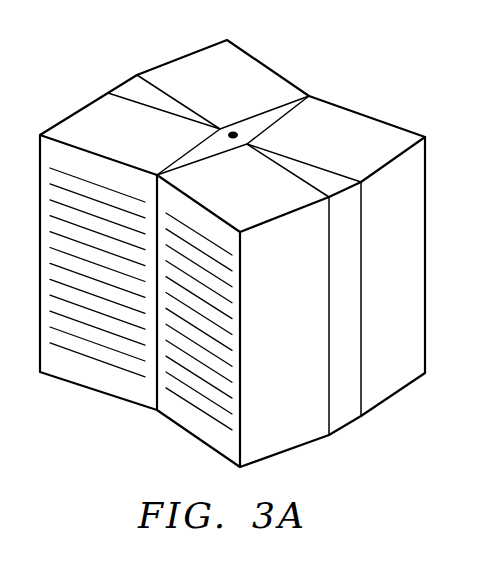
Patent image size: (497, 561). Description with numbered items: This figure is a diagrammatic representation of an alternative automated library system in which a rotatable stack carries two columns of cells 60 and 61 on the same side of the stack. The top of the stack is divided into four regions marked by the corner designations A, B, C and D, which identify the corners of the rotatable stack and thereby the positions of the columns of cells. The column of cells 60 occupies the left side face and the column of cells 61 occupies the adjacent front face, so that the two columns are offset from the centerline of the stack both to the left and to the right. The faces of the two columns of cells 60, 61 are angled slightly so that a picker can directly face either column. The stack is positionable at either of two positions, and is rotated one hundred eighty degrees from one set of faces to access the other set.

The column of cells 60 is at (82, 378).
The column of cells 61 is at (183, 423).
The corner of rotatable stack A is at (130, 125).
The corner of rotatable stack B is at (259, 188).
The corner of rotatable stack C is at (336, 139).
The corner of rotatable stack D is at (223, 84).